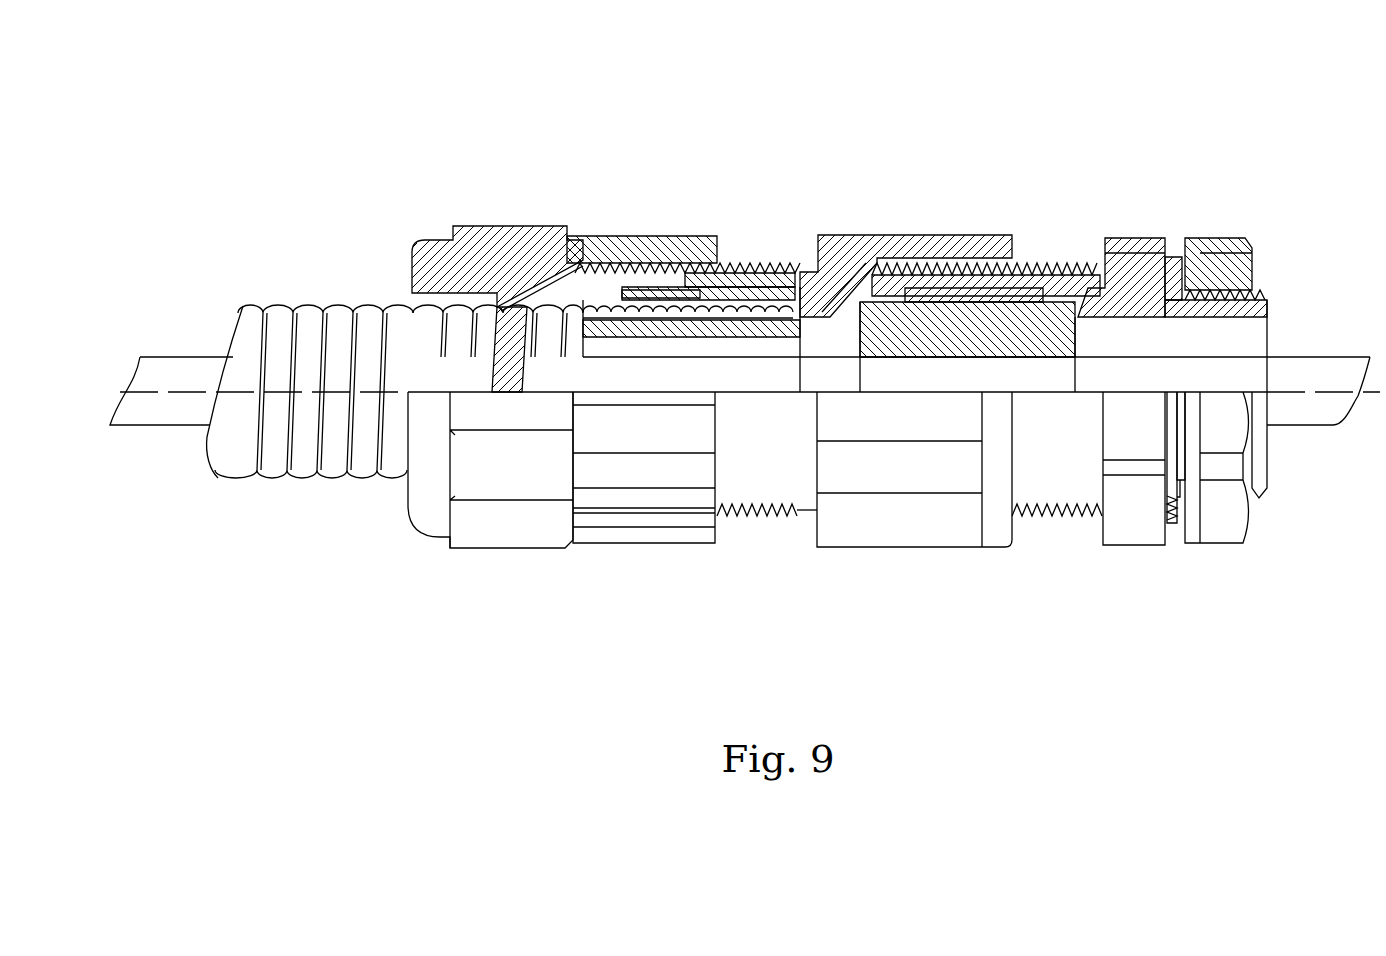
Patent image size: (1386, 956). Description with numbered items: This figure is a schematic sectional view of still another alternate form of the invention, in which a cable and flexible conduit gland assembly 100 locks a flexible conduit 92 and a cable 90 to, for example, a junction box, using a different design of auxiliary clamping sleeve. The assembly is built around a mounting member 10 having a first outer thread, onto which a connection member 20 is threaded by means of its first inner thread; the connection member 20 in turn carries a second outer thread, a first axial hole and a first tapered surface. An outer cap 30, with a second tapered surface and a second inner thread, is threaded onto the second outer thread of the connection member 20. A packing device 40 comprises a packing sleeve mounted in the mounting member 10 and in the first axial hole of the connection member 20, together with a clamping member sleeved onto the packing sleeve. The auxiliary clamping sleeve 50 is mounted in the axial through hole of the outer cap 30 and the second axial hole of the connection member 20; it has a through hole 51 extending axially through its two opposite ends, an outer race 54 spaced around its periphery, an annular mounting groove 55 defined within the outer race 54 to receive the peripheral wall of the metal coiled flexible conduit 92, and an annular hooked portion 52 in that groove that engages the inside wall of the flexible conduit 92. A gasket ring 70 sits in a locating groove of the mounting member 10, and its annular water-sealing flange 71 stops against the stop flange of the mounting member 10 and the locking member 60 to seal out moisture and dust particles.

The cable and flexible conduit gland assembly 100 is at (700, 128).
The cable 90 is at (1302, 367).
The flexible conduit 92 is at (340, 322).
The outer cap 30 is at (488, 562).
The auxiliary clamping sleeve 50 is at (775, 278).
The through hole 51 is at (630, 350).
The annular hooked portion 52 is at (633, 308).
The outer race 54 is at (740, 295).
The annular mounting groove 55 is at (675, 297).
The connection member 20 is at (908, 572).
The packing device 40 is at (947, 283).
The mounting member 10 is at (1097, 562).
The gasket ring 70 is at (1175, 523).
The annular water-sealing flange 71 is at (1178, 495).
The locking member 60 is at (1237, 510).